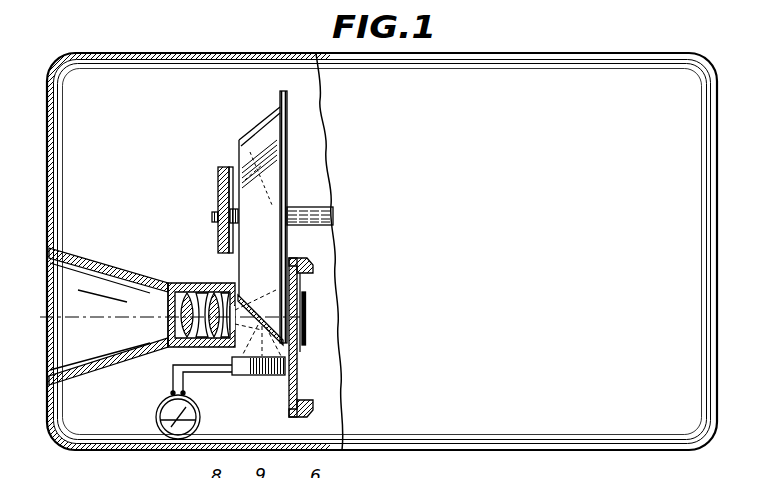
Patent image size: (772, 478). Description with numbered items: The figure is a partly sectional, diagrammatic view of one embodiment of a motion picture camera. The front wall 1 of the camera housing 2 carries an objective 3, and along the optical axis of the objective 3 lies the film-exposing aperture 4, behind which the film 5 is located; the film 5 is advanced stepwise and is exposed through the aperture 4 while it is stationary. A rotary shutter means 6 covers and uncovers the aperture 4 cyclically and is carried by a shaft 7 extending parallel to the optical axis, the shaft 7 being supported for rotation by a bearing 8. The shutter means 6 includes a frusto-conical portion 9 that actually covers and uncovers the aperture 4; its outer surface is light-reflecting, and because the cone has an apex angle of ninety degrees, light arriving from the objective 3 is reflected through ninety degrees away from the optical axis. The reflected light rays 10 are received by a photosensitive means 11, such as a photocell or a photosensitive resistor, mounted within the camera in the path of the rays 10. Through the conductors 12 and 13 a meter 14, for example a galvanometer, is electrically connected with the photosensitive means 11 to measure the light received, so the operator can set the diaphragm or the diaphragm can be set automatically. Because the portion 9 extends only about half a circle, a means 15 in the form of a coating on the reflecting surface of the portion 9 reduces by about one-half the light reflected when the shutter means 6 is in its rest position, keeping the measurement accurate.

The front wall 1 is at (47, 118).
The camera housing 2 is at (697, 262).
The objective 3 is at (62, 351).
The film-exposing aperture 4 is at (302, 307).
The film 5 is at (306, 325).
The rotary shutter means 6 is at (292, 157).
The shaft 7 is at (316, 210).
The bearing 8 is at (218, 186).
The frusto-conical portion 9 is at (265, 133).
The light rays 10 is at (293, 347).
The photosensitive means 11 is at (263, 372).
The conductor 12 is at (173, 379).
The conductor 13 is at (183, 381).
The meter 14 is at (178, 433).
The light-reducing coating means 15 is at (258, 290).